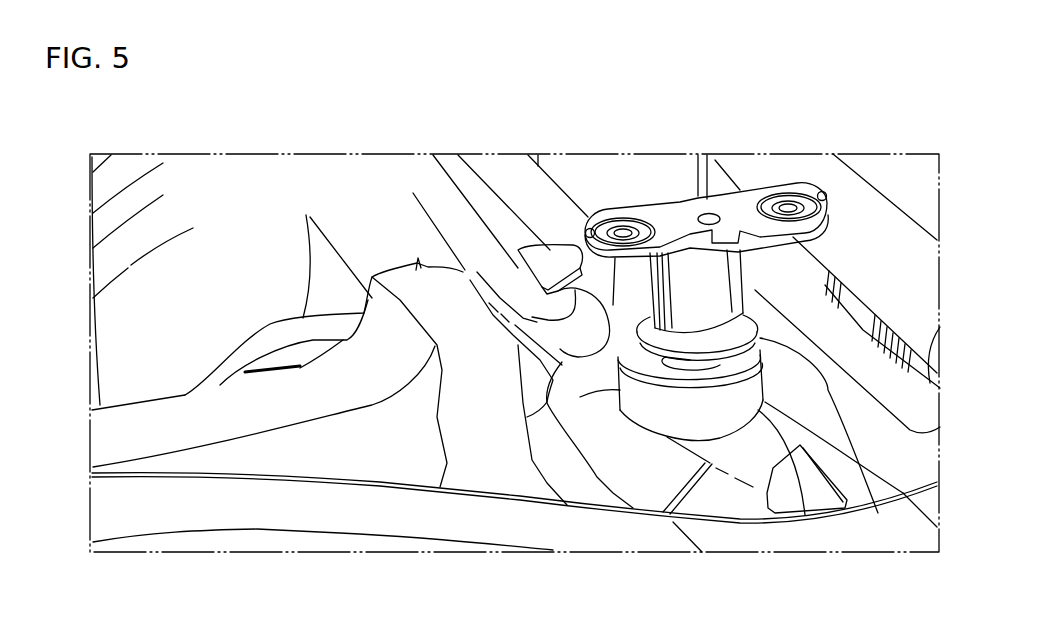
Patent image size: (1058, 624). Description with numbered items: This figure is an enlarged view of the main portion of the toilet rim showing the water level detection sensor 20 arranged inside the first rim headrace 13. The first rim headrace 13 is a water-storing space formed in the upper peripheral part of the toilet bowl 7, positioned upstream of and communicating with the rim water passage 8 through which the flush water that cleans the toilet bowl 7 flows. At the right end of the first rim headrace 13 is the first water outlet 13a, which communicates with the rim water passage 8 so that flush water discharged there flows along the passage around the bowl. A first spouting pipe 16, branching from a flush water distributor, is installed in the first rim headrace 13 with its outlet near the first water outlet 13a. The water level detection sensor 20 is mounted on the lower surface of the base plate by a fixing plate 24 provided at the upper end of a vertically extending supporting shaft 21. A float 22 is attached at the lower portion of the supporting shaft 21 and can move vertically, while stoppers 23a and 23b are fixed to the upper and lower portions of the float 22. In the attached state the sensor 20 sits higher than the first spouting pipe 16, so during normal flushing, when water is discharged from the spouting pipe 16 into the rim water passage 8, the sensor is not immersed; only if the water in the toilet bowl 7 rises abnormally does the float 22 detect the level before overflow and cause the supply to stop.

The toilet bowl 7 is at (160, 340).
The rim water passage 8 is at (375, 252).
The first rim headrace 13 is at (570, 462).
The first water outlet 13a is at (463, 240).
The first spouting pipe 16 is at (567, 405).
The water level detection sensor 20 is at (752, 288).
The supporting shaft 21 is at (717, 270).
The float 22 is at (805, 515).
The stopper 23a is at (680, 432).
The stopper 23b is at (878, 513).
The fixing plate 24 is at (743, 198).